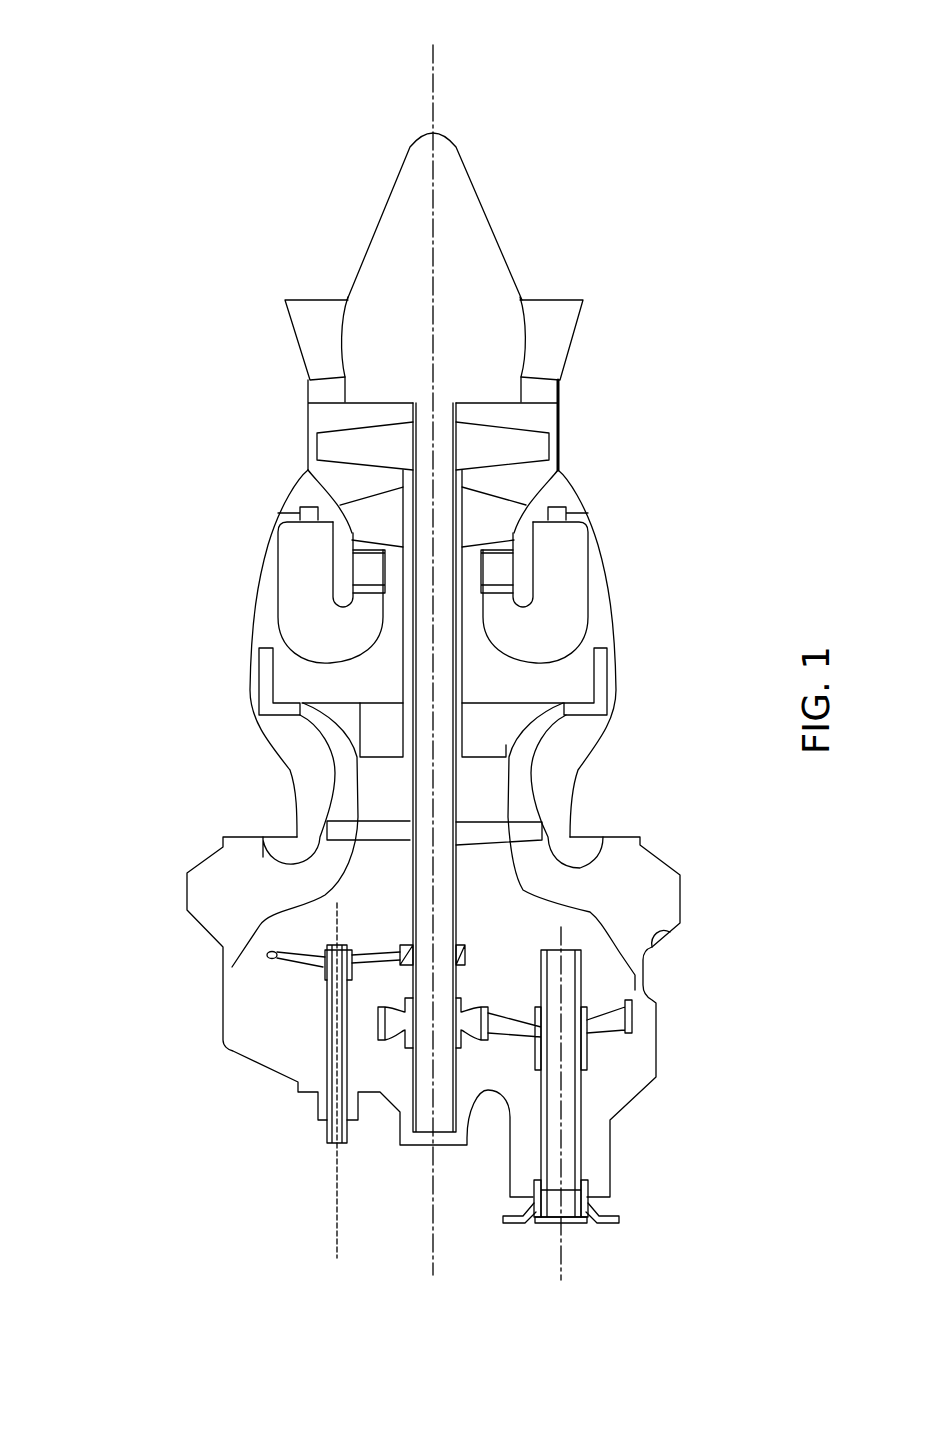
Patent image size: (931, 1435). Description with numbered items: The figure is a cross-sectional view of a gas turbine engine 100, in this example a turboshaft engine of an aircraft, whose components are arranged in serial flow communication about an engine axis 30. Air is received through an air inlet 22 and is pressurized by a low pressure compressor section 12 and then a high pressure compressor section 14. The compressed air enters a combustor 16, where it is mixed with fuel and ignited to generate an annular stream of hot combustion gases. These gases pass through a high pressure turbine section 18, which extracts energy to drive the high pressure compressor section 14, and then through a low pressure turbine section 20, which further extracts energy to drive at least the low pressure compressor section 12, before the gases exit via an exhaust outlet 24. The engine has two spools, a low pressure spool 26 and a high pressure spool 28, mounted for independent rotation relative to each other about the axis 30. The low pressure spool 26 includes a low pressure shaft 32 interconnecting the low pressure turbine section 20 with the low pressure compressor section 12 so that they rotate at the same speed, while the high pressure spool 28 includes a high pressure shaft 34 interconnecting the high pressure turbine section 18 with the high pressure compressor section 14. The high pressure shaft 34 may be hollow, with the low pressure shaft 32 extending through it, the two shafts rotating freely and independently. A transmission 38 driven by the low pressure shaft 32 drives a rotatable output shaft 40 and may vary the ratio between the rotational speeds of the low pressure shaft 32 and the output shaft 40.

The gas turbine engine 100 is at (200, 330).
The low pressure compressor section 12 is at (343, 832).
The high pressure compressor section 14 is at (370, 728).
The combustor 16 is at (313, 577).
The high pressure turbine section 18 is at (490, 522).
The low pressure turbine section 20 is at (333, 445).
The air inlet 22 is at (673, 932).
The exhaust outlet 24 is at (557, 317).
The low pressure spool 26 is at (457, 800).
The high pressure spool 28 is at (463, 680).
The engine axis 30 is at (433, 72).
The low pressure shaft 32 is at (447, 898).
The high pressure shaft 34 is at (462, 618).
The transmission 38 is at (477, 1073).
The output shaft 40 is at (568, 1157).